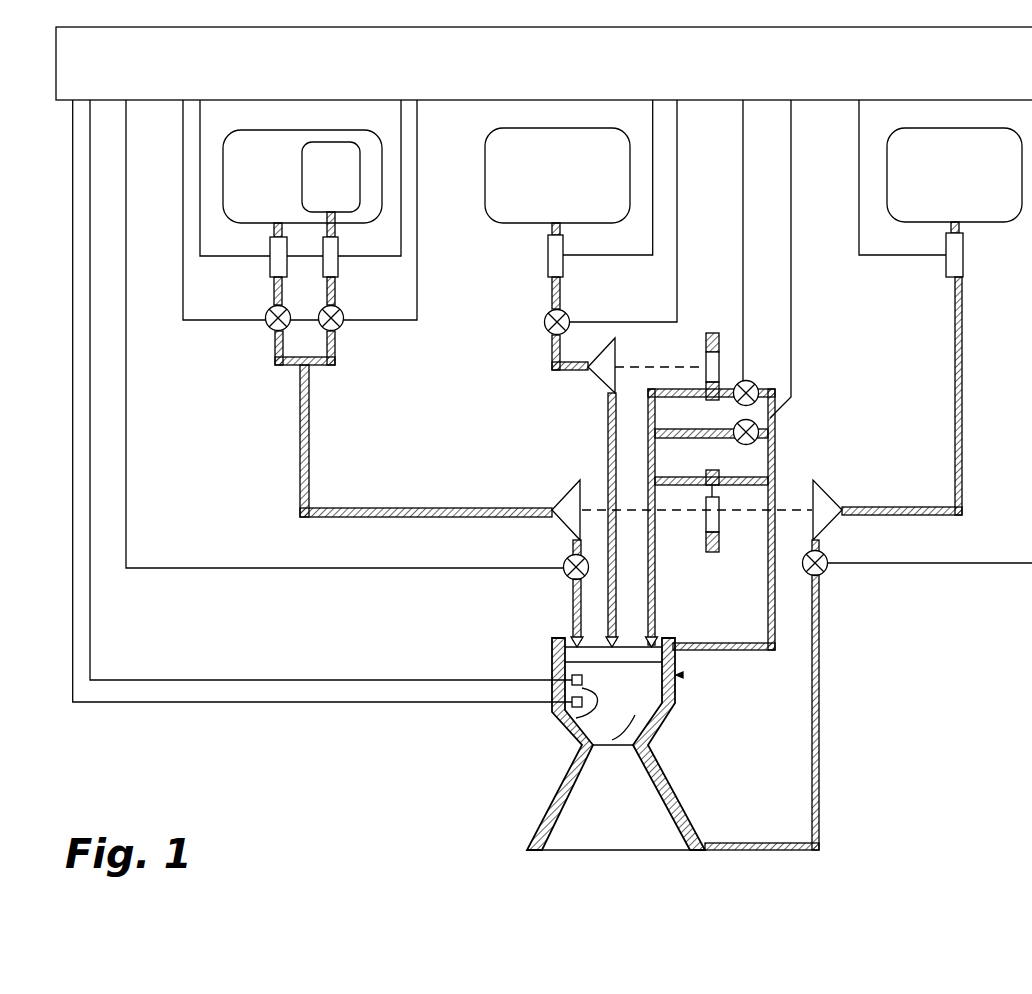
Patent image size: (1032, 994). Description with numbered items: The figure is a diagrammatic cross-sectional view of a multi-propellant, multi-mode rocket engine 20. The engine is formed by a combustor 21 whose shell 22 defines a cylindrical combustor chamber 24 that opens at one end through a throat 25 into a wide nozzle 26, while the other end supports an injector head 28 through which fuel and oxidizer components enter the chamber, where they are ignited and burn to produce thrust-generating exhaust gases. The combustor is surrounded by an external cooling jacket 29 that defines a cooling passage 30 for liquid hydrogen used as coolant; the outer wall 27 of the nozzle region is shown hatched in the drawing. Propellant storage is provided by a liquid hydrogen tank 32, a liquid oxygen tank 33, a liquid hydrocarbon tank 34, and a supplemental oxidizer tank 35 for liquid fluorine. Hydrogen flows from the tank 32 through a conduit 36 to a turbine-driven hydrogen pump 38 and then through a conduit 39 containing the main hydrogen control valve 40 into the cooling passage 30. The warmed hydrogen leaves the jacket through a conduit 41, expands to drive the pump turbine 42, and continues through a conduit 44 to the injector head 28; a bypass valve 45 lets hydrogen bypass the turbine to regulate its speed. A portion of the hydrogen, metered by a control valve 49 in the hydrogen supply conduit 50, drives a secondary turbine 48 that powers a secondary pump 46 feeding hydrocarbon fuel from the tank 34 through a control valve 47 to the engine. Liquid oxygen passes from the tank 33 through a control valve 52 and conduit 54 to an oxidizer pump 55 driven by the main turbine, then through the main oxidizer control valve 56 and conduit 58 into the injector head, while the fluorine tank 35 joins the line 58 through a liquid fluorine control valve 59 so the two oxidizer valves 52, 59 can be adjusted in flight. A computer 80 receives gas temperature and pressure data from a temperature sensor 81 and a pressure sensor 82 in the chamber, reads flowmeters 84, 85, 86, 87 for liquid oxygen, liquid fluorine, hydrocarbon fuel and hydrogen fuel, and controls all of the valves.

The rocket engine 20 is at (608, 762).
The combustor 21 is at (683, 677).
The shell 22 is at (580, 778).
The combustor chamber 24 is at (633, 695).
The throat 25 is at (637, 723).
The nozzle 26 is at (583, 840).
The nozzle wall 27 is at (540, 817).
The injector head 28 is at (587, 653).
The cooling jacket 29 is at (693, 820).
The cooling passage 30 is at (663, 767).
The liquid hydrogen tank 32 is at (945, 189).
The liquid oxygen tank 33 is at (246, 189).
The liquid hydrocarbon tank 34 is at (547, 189).
The supplemental oxidizer tank 35 is at (322, 187).
The conduit 36 is at (962, 410).
The hydrogen pump 38 is at (830, 498).
The conduit 39 is at (819, 735).
The main hydrogen control valve 40 is at (827, 572).
The conduit 41 is at (772, 530).
The pump turbine 42 is at (720, 540).
The conduit 44 is at (657, 578).
The bypass valve 45 is at (775, 447).
The secondary pump 46 is at (598, 378).
The control valve 47 is at (546, 312).
The secondary turbine 48 is at (709, 333).
The control valve 49 is at (752, 382).
The hydrogen supply conduit 50 is at (711, 420).
The control valve 52 is at (268, 326).
The conduit 54 is at (299, 368).
The oxidizer pump 55 is at (570, 488).
The main oxidizer control valve 56 is at (565, 573).
The conduit 58 is at (573, 596).
The liquid fluorine control valve 59 is at (340, 327).
The computer 80 is at (606, 76).
The temperature sensor 81 is at (560, 725).
The pressure sensor 82 is at (570, 733).
The flowmeter 84 is at (274, 262).
The flowmeter 85 is at (334, 264).
The flowmeter 86 is at (553, 245).
The flowmeter 87 is at (950, 258).